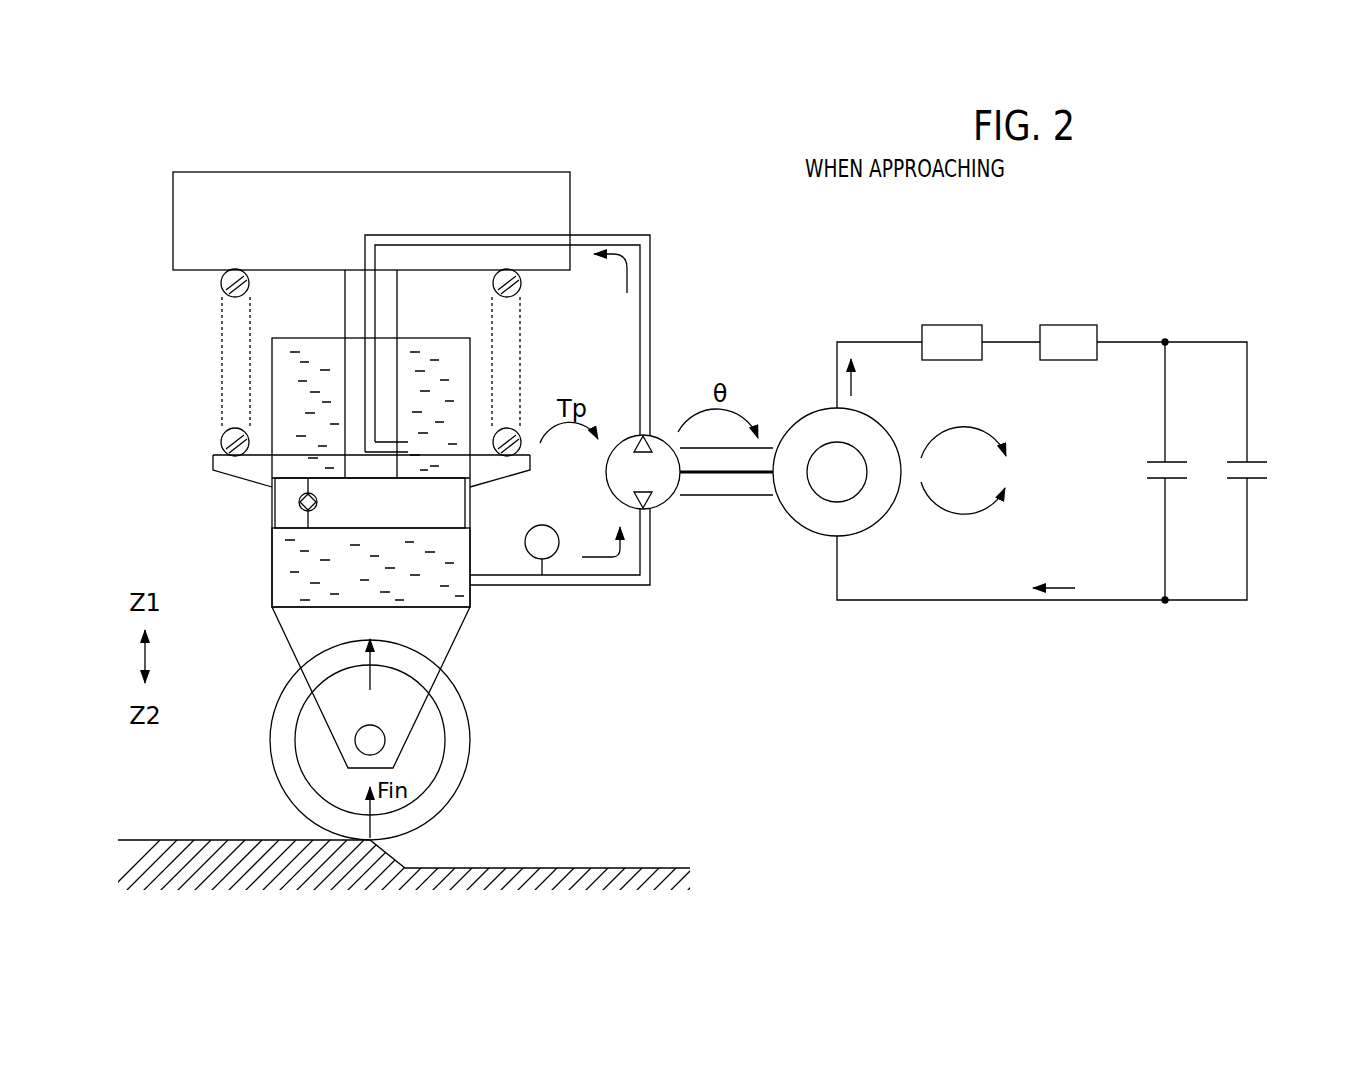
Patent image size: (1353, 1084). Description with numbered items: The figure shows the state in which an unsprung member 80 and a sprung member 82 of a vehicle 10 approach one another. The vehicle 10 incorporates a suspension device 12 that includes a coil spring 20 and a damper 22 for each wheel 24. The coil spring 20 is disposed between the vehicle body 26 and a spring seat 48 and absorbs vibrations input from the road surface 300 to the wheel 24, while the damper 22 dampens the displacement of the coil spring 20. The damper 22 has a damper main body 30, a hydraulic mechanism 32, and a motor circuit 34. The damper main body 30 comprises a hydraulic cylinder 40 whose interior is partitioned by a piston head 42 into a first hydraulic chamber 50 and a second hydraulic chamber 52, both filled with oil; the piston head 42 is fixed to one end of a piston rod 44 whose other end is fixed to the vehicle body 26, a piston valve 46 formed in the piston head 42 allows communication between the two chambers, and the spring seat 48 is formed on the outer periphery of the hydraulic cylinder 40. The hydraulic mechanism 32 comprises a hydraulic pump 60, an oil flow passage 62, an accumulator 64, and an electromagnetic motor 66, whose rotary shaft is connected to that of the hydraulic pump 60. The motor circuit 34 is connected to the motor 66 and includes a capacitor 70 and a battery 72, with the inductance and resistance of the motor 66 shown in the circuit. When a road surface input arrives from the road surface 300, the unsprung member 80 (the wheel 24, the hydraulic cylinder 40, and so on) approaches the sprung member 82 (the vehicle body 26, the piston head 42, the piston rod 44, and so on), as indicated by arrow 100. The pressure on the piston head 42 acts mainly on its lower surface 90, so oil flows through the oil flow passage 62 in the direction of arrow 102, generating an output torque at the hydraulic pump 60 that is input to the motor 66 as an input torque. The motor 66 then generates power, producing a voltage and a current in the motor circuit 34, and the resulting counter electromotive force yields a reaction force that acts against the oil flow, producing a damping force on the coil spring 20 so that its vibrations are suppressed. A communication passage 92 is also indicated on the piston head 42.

The vehicle 10 is at (377, 143).
The suspension device 12 is at (329, 397).
The coil spring 20 is at (222, 439).
The damper 22 is at (210, 506).
The wheel 24 is at (467, 727).
The vehicle body 26 is at (216, 176).
The damper main body 30 is at (393, 478).
The hydraulic mechanism 32 is at (550, 435).
The motor circuit 34 is at (1063, 429).
The hydraulic cylinder 40 is at (268, 557).
The piston head 42 is at (427, 518).
The piston rod 44 is at (348, 301).
The piston valve 46 is at (318, 501).
The spring seat 48 is at (490, 472).
The first hydraulic chamber 50 is at (396, 595).
The second hydraulic chamber 52 is at (453, 383).
The hydraulic pump 60 is at (656, 506).
The oil flow passage 62 is at (648, 323).
The accumulator 64 is at (548, 525).
The electromagnetic motor 66 is at (815, 428).
The capacitor 70 is at (1173, 460).
The battery 72 is at (1258, 460).
The unsprung member 80 is at (266, 655).
The sprung member 82 is at (609, 206).
The lower surface 90 is at (347, 530).
The communication passage 92 is at (303, 478).
The arrow 100 is at (368, 676).
The arrow 102 is at (627, 284).
The road surface 300 is at (200, 845).